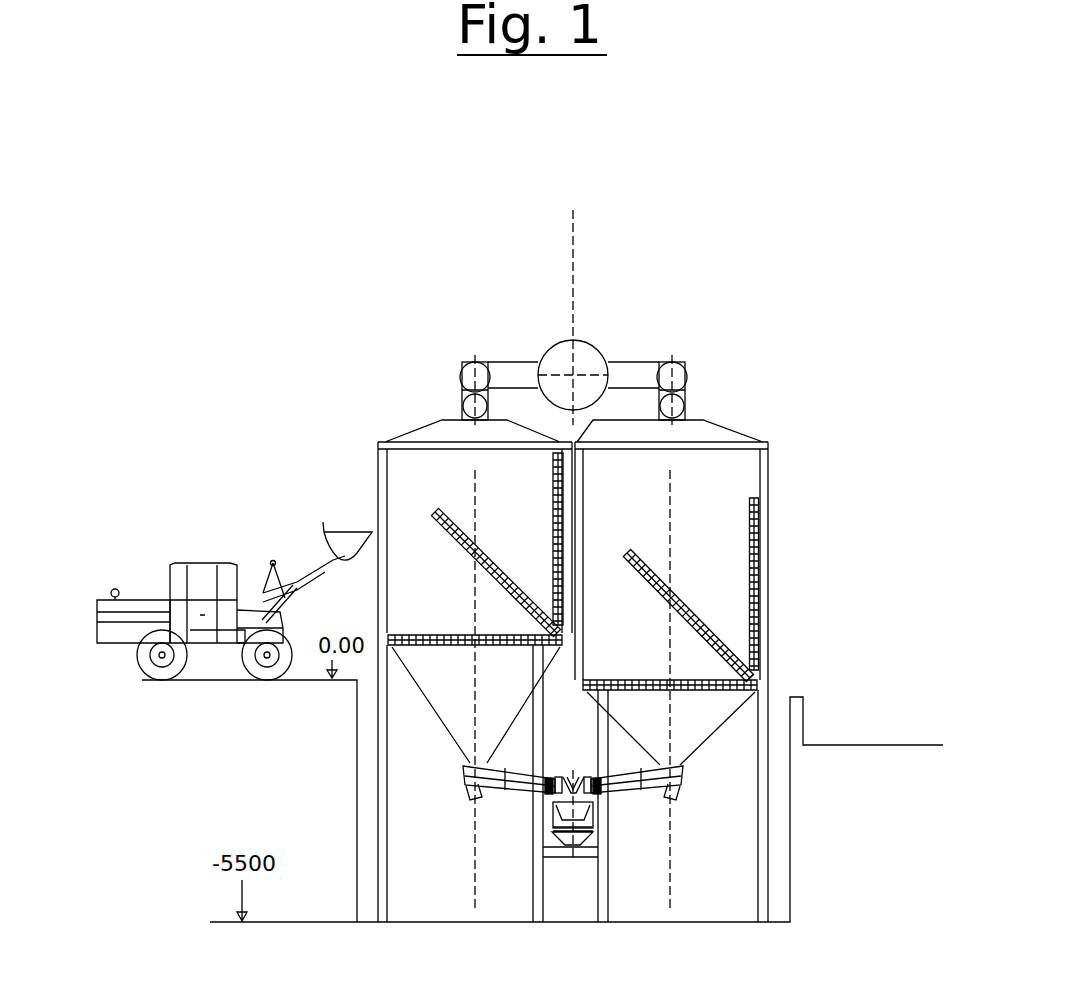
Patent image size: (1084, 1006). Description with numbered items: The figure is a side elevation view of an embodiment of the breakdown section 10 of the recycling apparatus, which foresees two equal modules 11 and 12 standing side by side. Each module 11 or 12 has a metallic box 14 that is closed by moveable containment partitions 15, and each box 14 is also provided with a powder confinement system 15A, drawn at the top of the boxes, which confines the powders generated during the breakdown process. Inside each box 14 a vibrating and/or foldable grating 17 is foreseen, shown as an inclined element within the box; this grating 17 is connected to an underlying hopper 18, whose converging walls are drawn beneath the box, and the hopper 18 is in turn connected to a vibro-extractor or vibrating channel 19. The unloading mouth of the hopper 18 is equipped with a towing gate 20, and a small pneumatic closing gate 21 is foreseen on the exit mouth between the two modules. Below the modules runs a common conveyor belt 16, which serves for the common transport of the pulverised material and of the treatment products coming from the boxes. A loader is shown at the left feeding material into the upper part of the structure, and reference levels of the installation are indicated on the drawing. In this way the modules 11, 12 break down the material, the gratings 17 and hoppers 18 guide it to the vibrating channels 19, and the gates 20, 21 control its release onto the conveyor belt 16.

The breakdown section 10 is at (825, 366).
The module 11 is at (405, 430).
The module 12 is at (733, 428).
The metallic box 14 is at (403, 463).
The moveable containment partitions 15 is at (378, 592).
The powder confinement system 15A is at (523, 425).
The conveyor belt 16 is at (583, 850).
The vibrating and/or foldable grating 17 is at (492, 560).
The hopper 18 is at (427, 707).
The vibro-extractor or vibrating channel 19 is at (517, 790).
The towing gate 20 is at (472, 790).
The small pneumatic closing gate 21 is at (593, 780).